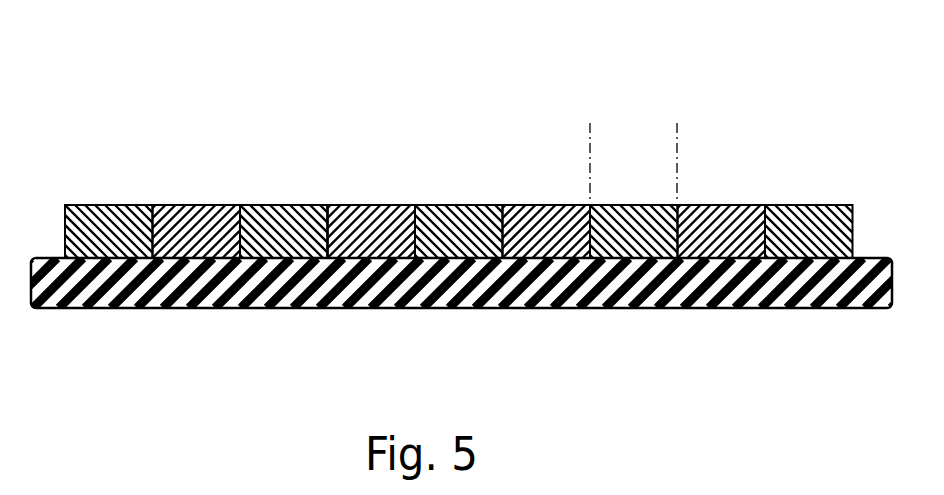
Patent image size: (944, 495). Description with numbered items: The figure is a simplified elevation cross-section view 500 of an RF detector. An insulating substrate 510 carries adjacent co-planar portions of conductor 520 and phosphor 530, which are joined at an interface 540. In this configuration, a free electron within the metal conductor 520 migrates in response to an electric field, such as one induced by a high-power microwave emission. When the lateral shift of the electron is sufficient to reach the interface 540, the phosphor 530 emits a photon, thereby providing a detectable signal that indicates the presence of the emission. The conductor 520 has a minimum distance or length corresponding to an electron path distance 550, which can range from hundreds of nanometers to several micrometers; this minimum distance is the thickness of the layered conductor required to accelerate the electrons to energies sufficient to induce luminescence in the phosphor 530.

The cross-section view 500 is at (740, 70).
The insulating substrate 510 is at (130, 308).
The conductor 520 is at (262, 205).
The phosphor 530 is at (548, 205).
The interface 540 is at (327, 199).
The electron path distance 550 is at (667, 161).